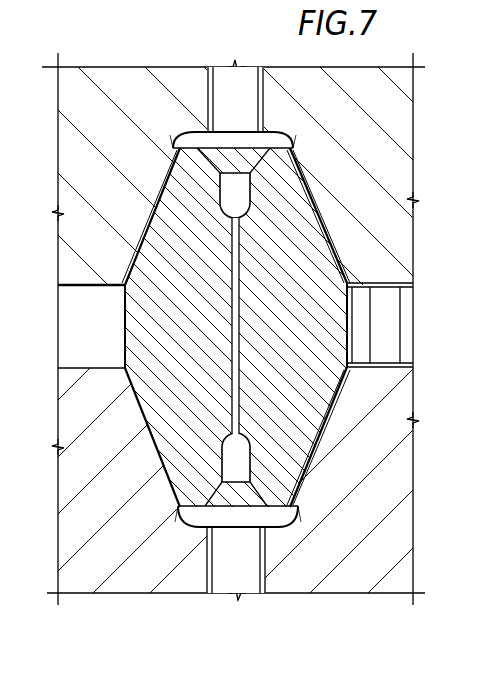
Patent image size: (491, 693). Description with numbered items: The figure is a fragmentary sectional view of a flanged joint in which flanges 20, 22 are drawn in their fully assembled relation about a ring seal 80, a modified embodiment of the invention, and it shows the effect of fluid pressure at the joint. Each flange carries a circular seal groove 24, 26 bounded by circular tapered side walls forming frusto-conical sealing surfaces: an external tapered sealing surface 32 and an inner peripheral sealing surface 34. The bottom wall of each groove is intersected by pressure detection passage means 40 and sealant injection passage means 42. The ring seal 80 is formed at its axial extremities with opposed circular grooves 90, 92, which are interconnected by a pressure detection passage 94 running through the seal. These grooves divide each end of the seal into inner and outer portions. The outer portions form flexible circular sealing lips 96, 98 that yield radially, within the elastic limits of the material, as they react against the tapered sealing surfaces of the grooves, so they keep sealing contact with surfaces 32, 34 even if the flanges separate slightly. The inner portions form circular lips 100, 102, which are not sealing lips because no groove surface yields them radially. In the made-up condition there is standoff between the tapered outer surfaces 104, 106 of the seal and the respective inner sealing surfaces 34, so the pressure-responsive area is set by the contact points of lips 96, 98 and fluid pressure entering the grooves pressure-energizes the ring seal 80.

The flange 20 is at (387, 102).
The flange 22 is at (395, 472).
The seal groove 24 is at (187, 131).
The seal groove 26 is at (200, 510).
The external tapered sealing surface 32 is at (137, 242).
The inner peripheral sealing surface 34 is at (420, 393).
The pressure detection passage means 40 is at (225, 67).
The sealant injection passage means 42 is at (243, 570).
The ring seal 80 is at (155, 305).
The circular groove 90 is at (228, 193).
The circular groove 92 is at (232, 481).
The pressure detection passage 94 is at (237, 378).
The flexible circular sealing lip 96 is at (183, 170).
The flexible circular sealing lip 98 is at (185, 460).
The circular lip 100 is at (277, 178).
The circular lip 102 is at (285, 485).
The tapered outer surface 104 is at (312, 198).
The tapered outer surface 106 is at (313, 446).